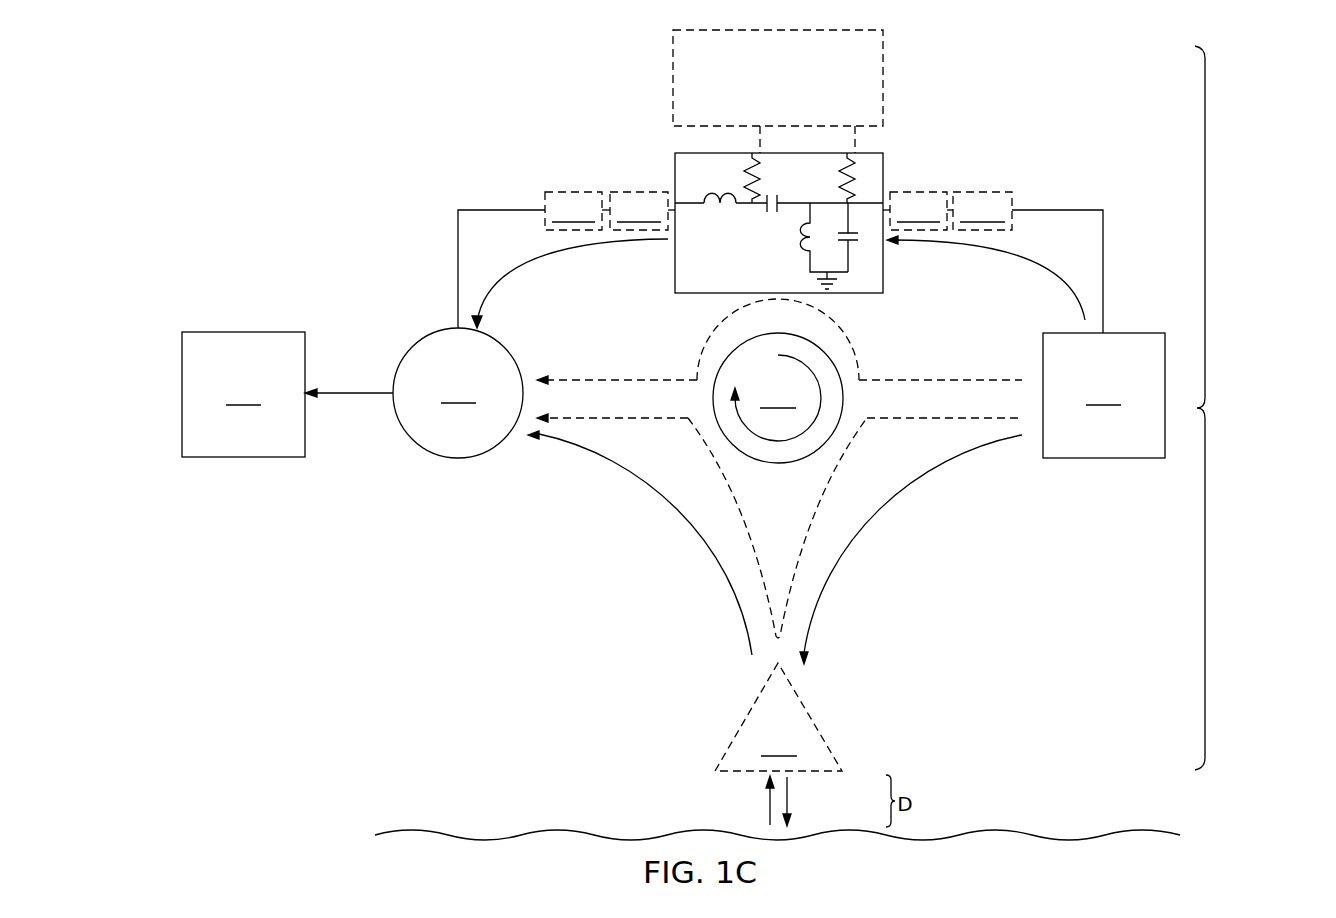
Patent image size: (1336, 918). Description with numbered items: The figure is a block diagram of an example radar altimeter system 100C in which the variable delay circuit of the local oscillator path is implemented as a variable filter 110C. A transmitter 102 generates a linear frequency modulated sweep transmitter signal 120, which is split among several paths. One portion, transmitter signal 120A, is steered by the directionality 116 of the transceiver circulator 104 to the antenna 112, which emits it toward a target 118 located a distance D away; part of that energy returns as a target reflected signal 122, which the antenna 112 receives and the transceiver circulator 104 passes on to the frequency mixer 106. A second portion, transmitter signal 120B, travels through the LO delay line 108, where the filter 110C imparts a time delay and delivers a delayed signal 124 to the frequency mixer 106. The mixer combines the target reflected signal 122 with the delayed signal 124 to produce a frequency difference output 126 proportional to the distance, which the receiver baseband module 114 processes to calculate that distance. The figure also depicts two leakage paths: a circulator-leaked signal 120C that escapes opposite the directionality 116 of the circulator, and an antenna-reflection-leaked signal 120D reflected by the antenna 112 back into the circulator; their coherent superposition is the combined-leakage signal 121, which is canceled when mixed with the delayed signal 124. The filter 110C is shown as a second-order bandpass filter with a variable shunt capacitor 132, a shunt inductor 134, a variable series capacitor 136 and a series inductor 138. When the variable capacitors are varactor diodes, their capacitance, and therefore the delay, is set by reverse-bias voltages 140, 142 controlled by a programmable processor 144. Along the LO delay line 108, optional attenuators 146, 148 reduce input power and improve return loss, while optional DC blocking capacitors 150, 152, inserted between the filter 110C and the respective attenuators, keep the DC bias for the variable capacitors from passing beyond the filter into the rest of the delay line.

The altimeter system 100C is at (1239, 408).
The transmitter 102 is at (1104, 395).
The transceiver circulator 104 is at (778, 398).
The frequency mixer 106 is at (458, 393).
The LO delay line 108 is at (517, 210).
The variable filter 110C is at (873, 153).
The antenna 112 is at (778, 717).
The receiver baseband module 114 is at (243, 394).
The directionality 116 is at (778, 442).
The target 118 is at (652, 820).
The transmitter signal 120 is at (1012, 435).
The transmitter signal 120A is at (833, 552).
The transmitter signal 120B is at (1060, 272).
The circulator-leaked signal 120C is at (860, 335).
The antenna-reflection-leaked signal 120D is at (795, 587).
The combined-leakage signal 121 is at (607, 410).
The target reflected signal 122 is at (722, 560).
The delayed signal 124 is at (582, 247).
The frequency difference output 126 is at (352, 393).
The variable shunt capacitor 132 is at (855, 240).
The shunt inductor 134 is at (807, 233).
The variable series capacitor 136 is at (773, 194).
The series inductor 138 is at (703, 207).
The reverse-bias voltage 140 is at (848, 173).
The reverse-bias voltage 142 is at (747, 170).
The programmable processor 144 is at (887, 77).
The optional attenuator 146 is at (573, 211).
The optional attenuator 148 is at (982, 211).
The optional DC blocking capacitor 150 is at (638, 211).
The optional DC blocking capacitor 152 is at (918, 211).